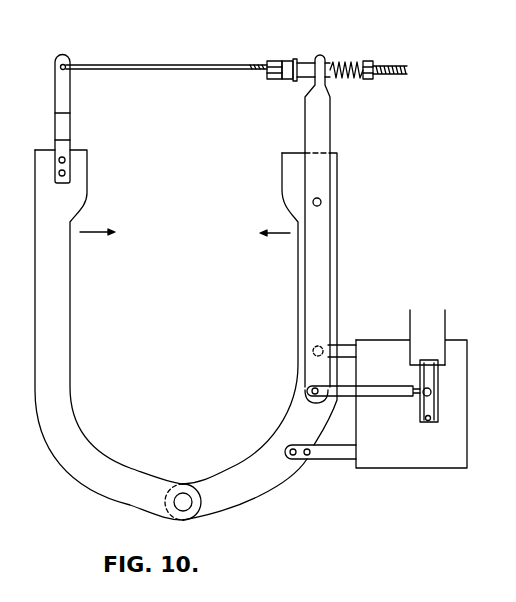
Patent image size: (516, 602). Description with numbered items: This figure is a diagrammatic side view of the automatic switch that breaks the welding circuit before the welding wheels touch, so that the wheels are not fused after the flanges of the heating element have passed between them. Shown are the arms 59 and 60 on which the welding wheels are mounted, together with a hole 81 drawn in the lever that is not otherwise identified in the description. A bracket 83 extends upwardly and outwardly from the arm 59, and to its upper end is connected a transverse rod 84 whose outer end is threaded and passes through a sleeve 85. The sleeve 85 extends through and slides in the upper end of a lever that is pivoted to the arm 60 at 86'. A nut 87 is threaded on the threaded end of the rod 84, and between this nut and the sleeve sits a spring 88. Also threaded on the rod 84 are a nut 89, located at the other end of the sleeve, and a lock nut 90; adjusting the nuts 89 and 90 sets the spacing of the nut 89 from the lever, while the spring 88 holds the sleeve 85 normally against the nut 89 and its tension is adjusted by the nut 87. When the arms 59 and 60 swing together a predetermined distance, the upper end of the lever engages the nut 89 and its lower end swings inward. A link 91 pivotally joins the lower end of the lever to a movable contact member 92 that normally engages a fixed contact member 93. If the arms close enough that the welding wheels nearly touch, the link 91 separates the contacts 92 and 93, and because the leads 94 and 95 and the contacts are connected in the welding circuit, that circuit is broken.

The arm 59 is at (71, 350).
The arm 60 is at (298, 313).
The hole 81 is at (322, 200).
The bracket 83 is at (70, 101).
The transverse rod 84 is at (144, 65).
The sleeve 85 is at (306, 62).
The pivot 86' is at (333, 229).
The nut 87 is at (373, 61).
The spring 88 is at (341, 62).
The nut 89 is at (289, 58).
The lock nut 90 is at (266, 61).
The link 91 is at (342, 397).
The movable contact member 92 is at (420, 405).
The fixed contact member 93 is at (438, 404).
The lead 94 is at (410, 318).
The lead 95 is at (445, 318).